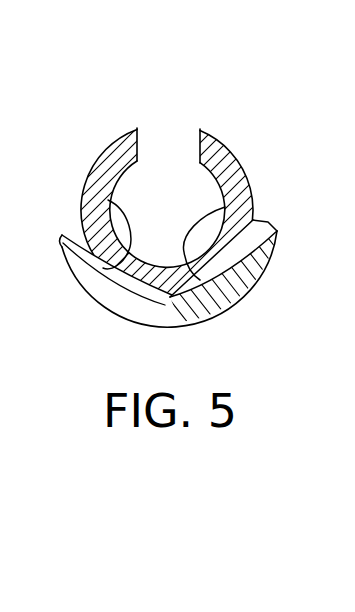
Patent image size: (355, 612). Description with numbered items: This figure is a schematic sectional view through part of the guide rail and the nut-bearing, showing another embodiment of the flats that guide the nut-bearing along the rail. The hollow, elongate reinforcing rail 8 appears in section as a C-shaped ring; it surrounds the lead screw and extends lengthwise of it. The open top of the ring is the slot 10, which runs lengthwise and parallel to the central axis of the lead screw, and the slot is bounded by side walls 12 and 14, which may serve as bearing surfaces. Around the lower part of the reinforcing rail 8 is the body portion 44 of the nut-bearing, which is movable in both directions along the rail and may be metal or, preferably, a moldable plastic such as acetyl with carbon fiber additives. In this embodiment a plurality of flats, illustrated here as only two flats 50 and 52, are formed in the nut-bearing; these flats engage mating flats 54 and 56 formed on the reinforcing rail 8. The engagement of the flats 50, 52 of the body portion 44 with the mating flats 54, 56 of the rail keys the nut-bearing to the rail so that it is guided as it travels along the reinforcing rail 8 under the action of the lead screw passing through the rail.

The reinforcing rail 8 is at (216, 148).
The slot 10 is at (165, 132).
The side wall 12 is at (199, 152).
The side wall 14 is at (138, 147).
The body portion 44 is at (267, 261).
The flat 50 is at (198, 224).
The flat 52 is at (110, 213).
The mating flat 54 is at (216, 279).
The mating flat 56 is at (140, 270).